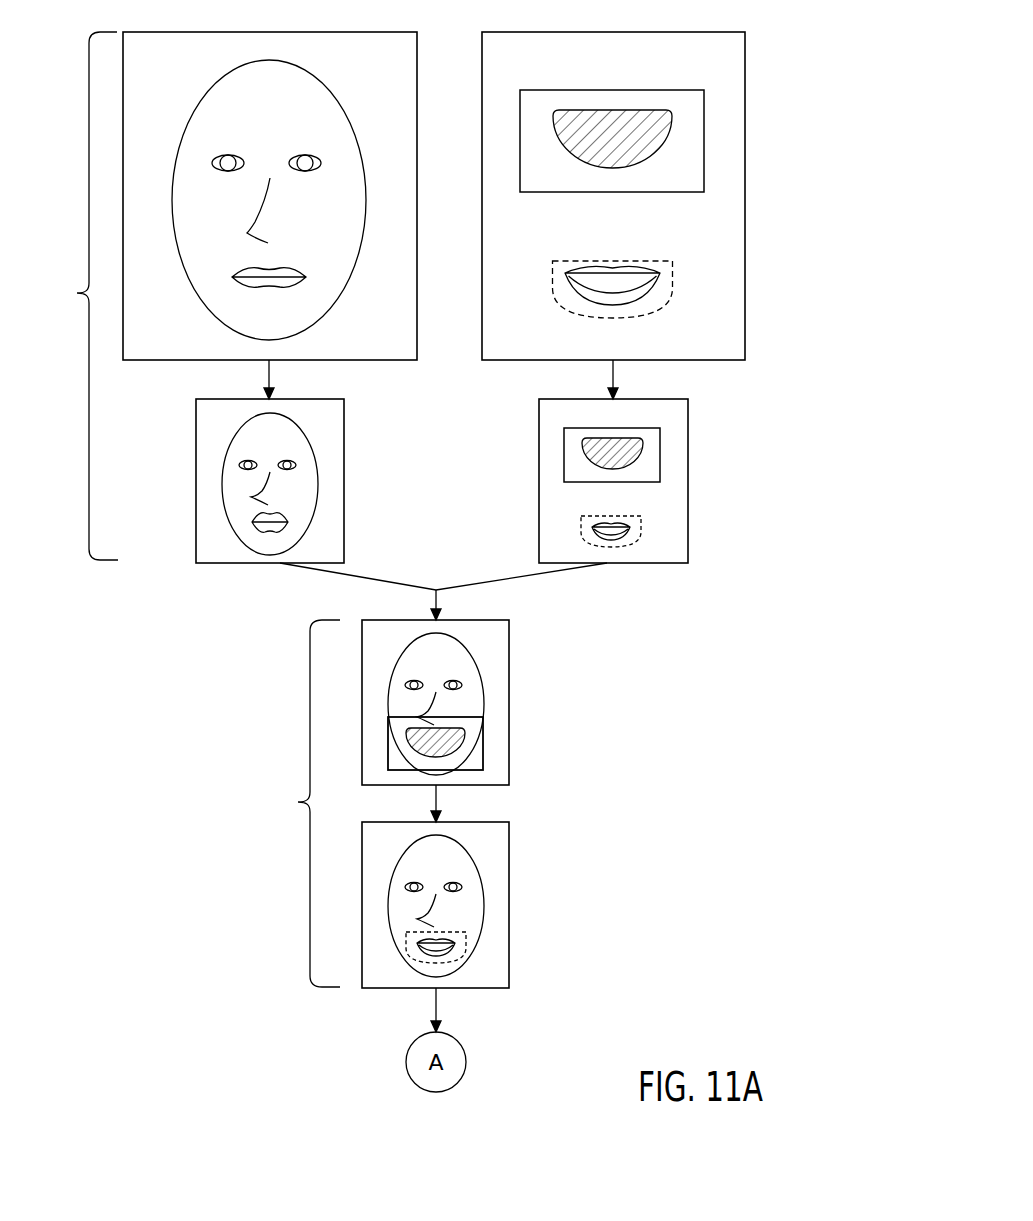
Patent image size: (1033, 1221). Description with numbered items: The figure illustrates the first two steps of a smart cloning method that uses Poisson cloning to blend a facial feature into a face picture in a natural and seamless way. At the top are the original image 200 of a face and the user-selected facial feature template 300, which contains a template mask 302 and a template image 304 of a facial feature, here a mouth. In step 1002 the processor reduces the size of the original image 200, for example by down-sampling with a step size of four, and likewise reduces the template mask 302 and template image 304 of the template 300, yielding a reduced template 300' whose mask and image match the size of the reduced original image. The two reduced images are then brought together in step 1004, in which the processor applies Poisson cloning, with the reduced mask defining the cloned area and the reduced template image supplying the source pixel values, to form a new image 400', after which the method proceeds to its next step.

The original image 200 is at (270, 180).
The facial feature template 300 is at (632, 180).
The template mask 302 is at (660, 141).
The template image 304 is at (679, 289).
The reduced template 300' is at (648, 481).
The new image 400' is at (483, 905).
The image reduction step 1002 is at (76, 296).
The Poisson cloning step 1004 is at (297, 803).